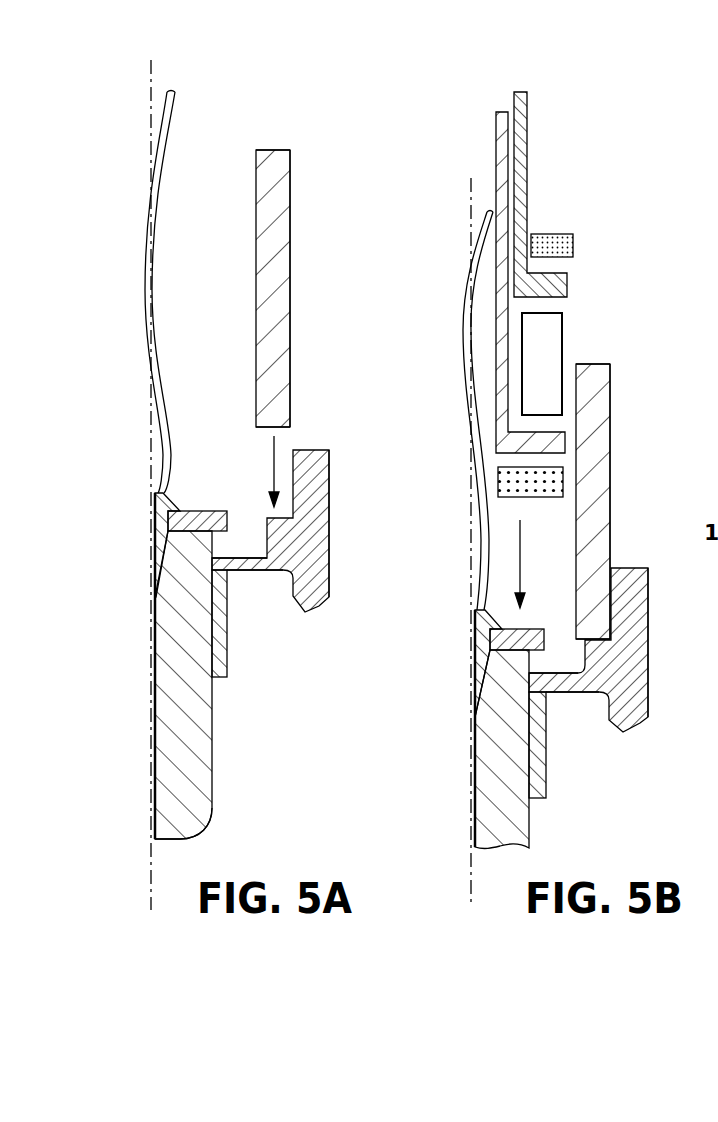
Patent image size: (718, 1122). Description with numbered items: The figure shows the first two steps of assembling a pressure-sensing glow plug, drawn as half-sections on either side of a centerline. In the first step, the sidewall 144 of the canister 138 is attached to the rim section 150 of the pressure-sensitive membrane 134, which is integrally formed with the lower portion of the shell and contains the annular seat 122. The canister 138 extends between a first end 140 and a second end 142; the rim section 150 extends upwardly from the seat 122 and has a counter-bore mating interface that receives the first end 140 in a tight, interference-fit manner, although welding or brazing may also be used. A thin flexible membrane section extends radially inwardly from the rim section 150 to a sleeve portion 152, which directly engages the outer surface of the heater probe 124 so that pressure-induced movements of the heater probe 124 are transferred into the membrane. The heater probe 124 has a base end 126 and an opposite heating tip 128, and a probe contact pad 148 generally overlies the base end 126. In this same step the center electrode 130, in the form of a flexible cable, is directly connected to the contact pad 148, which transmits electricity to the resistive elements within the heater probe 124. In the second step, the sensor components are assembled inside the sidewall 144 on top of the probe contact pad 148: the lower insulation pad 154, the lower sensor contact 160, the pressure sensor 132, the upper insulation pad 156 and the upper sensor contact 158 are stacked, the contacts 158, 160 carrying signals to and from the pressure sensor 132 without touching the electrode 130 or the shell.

In FIG. 5A, the annular seat 122 is at (318, 606).
In FIG. 5B, the annular seat 122 is at (640, 723).
In FIG. 5A, the heater probe 124 is at (218, 743).
In FIG. 5B, the heater probe 124 is at (552, 788).
In FIG. 5A, the base end 126 is at (193, 520).
In FIG. 5B, the base end 126 is at (517, 627).
In FIG. 5A, the heating tip 128 is at (173, 839).
In FIG. 5A, the center electrode 130 is at (146, 258).
In FIG. 5B, the center electrode 130 is at (468, 333).
In FIG. 5B, the pressure sensor 132 is at (574, 330).
In FIG. 5A, the pressure-sensitive membrane 134 is at (240, 570).
In FIG. 5B, the pressure-sensitive membrane 134 is at (570, 692).
In FIG. 5A, the canister 138 is at (297, 242).
In FIG. 5B, the canister 138 is at (616, 402).
In FIG. 5A, the first end 140 is at (277, 430).
In FIG. 5B, the first end 140 is at (595, 641).
In FIG. 5A, the second end 142 is at (275, 150).
In FIG. 5B, the second end 142 is at (594, 364).
In FIG. 5A, the sidewall 144 is at (290, 303).
In FIG. 5B, the sidewall 144 is at (610, 533).
In FIG. 5A, the probe contact pad 148 is at (165, 520).
In FIG. 5B, the probe contact pad 148 is at (475, 645).
In FIG. 5A, the rim section 150 is at (329, 500).
In FIG. 5B, the rim section 150 is at (648, 608).
In FIG. 5A, the sleeve portion 152 is at (227, 643).
In FIG. 5B, the sleeve portion 152 is at (546, 763).
In FIG. 5B, the lower insulation pad 154 is at (563, 482).
In FIG. 5B, the upper insulation pad 156 is at (573, 247).
In FIG. 5B, the upper sensor contact 158 is at (567, 289).
In FIG. 5B, the lower sensor contact 160 is at (498, 438).